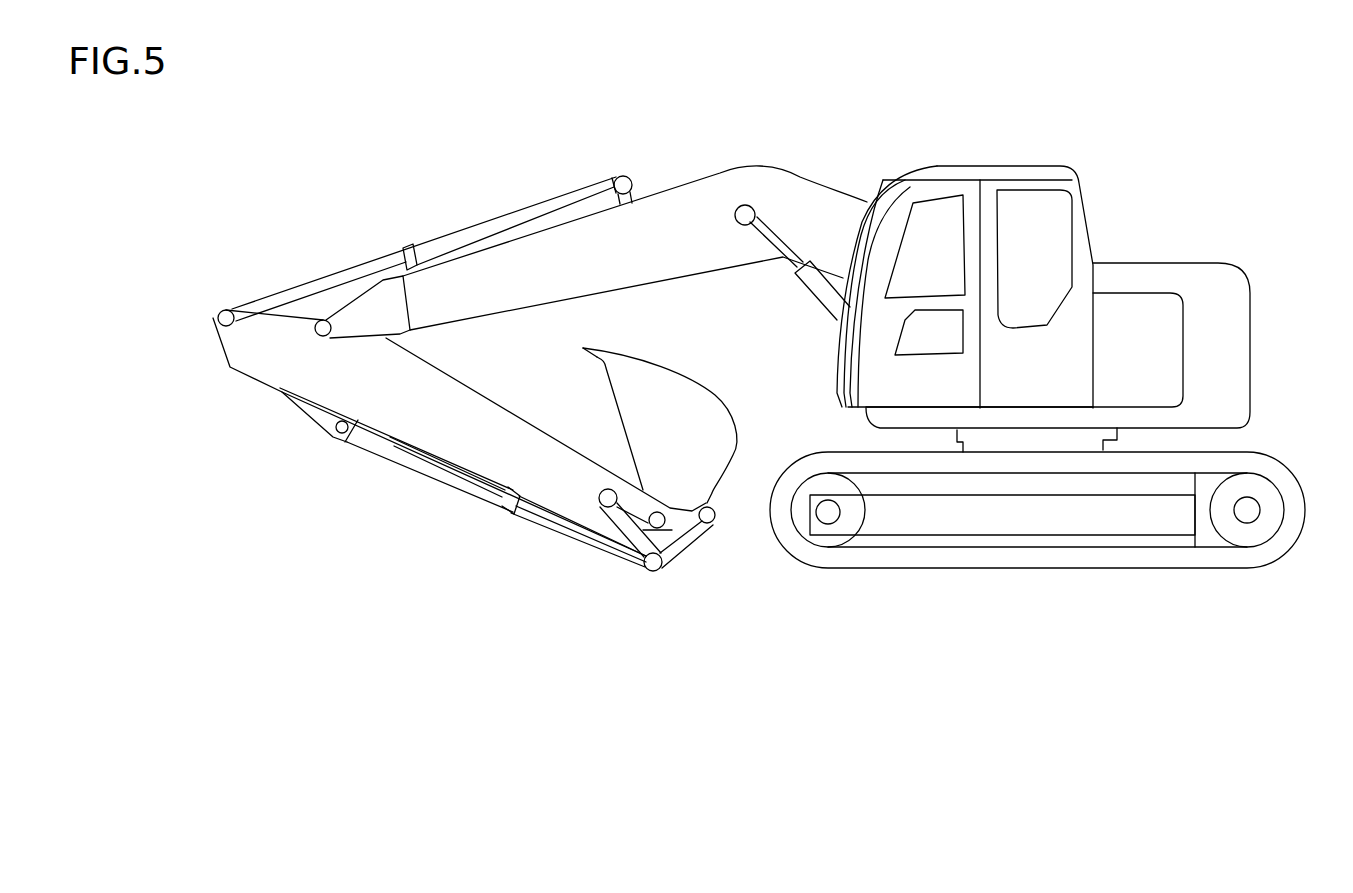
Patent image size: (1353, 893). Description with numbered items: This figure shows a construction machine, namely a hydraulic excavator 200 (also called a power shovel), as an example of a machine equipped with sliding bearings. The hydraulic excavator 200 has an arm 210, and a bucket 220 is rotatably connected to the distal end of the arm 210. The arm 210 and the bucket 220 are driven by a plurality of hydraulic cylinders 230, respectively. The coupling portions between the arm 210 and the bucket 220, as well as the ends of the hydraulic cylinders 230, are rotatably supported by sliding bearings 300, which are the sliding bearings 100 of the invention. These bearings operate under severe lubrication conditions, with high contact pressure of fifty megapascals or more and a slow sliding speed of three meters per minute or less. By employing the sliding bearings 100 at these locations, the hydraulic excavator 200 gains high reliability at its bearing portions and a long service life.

The hydraulic excavator 200 is at (1115, 240).
The arm 210 is at (463, 282).
The bucket 220 is at (652, 392).
The hydraulic cylinders 230 is at (507, 222).
The sliding bearings 300 is at (323, 318).
The sliding bearings 100 is at (486, 215).